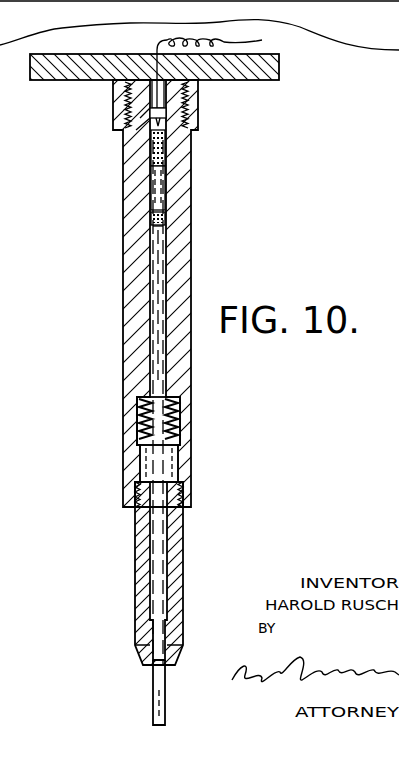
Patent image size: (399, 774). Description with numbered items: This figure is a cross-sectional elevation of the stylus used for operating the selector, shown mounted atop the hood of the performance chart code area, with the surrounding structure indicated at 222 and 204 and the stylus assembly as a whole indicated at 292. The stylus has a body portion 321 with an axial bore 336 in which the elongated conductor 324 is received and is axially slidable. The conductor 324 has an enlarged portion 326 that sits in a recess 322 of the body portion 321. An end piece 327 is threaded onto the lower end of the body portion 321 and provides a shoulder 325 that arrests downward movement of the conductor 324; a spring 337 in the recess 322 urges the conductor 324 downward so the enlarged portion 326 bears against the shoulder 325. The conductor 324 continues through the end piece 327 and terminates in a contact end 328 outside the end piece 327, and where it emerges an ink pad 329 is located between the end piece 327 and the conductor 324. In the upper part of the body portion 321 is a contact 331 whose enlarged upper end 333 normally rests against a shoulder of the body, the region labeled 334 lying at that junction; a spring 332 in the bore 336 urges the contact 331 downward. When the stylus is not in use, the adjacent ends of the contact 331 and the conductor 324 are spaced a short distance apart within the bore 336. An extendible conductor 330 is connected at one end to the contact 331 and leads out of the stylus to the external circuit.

The shell 204 is at (34, 436).
The wall 222 is at (26, 390).
The probe assembly 292 is at (192, 373).
The body portion 321 is at (191, 276).
The recess 322 is at (179, 426).
The elongated conductor 324 is at (160, 249).
The shoulder 325 is at (278, 80).
The enlarged portion 326 is at (171, 456).
The end piece 327 is at (183, 530).
The contact end 328 is at (157, 708).
The ink pad 329 is at (141, 646).
The extendible conductor 330 is at (229, 71).
The contact 331 is at (160, 189).
The spring 332 is at (166, 159).
The enlarged upper end 333 is at (121, 129).
The terminal head 334 is at (150, 112).
The axial bore 336 is at (155, 222).
The spring 337 is at (140, 424).